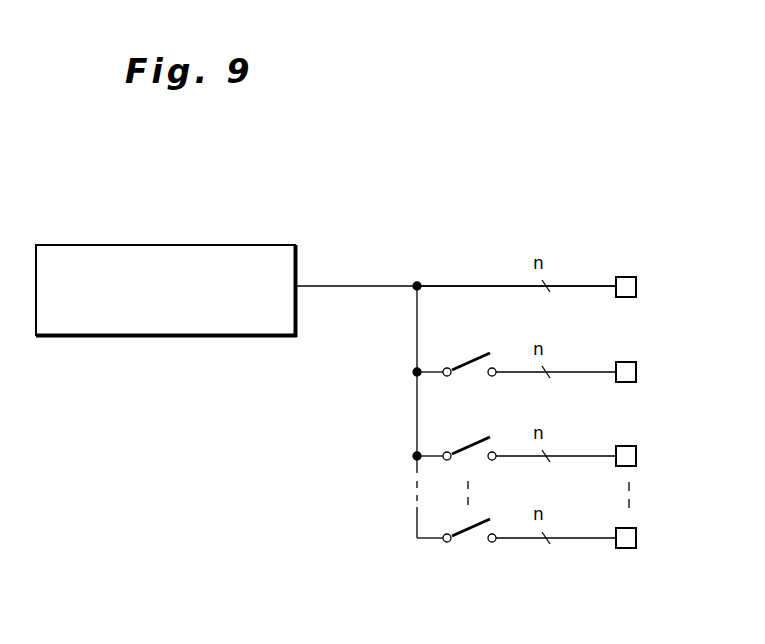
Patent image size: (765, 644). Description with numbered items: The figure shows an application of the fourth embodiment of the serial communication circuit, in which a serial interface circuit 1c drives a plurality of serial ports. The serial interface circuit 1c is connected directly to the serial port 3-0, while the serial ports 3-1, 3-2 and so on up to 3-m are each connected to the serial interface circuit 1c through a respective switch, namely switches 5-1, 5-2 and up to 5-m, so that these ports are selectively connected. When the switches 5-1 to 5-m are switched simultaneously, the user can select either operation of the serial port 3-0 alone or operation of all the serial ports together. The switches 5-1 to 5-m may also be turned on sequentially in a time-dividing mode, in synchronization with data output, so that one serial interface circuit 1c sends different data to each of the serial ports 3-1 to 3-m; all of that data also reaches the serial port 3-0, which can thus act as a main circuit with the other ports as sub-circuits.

The serial interface circuit 1c is at (238, 245).
The serial port 3-0 is at (636, 277).
The serial port 3-1 is at (636, 362).
The serial port 3-2 is at (636, 447).
The serial port 3-m is at (636, 529).
The switch 5-1 is at (472, 356).
The switch 5-2 is at (472, 444).
The switch 5-m is at (467, 536).